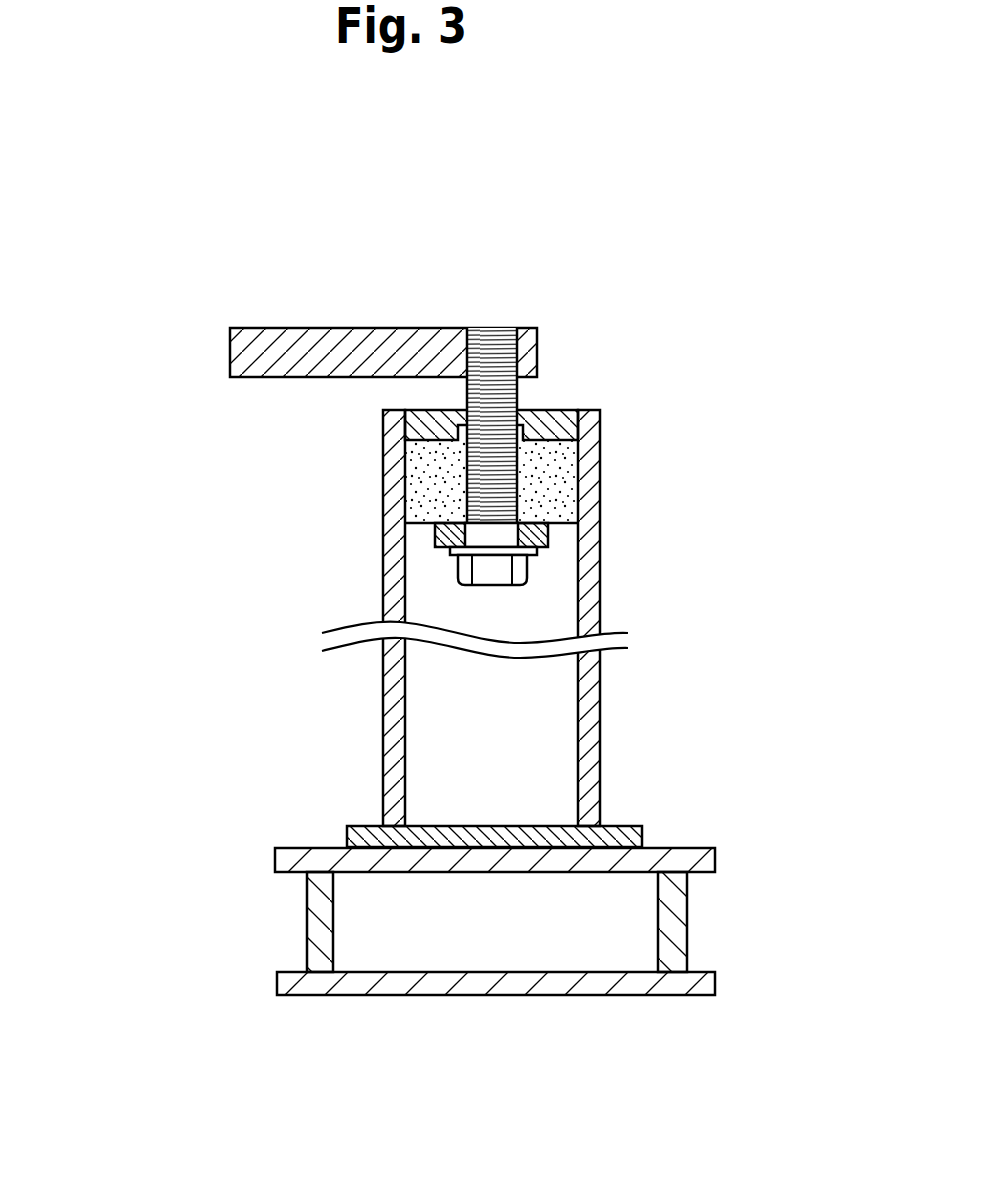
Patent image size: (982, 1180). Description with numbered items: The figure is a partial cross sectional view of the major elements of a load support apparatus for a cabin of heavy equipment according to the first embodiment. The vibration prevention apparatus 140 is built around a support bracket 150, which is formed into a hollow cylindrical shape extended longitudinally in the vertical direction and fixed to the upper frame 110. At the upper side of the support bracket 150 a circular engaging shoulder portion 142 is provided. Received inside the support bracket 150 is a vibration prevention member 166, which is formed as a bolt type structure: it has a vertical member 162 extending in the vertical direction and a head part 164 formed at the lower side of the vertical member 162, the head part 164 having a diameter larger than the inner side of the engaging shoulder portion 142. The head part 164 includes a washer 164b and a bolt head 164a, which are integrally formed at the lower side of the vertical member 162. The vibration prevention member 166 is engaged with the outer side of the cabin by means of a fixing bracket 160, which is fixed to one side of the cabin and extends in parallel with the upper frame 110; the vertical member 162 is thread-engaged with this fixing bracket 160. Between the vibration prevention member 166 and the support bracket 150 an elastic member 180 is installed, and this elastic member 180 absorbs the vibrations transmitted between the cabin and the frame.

The upper frame 110 is at (312, 848).
The vibration prevention apparatus 140 is at (240, 195).
The engaging shoulder portion 142 is at (553, 410).
The support bracket 150 is at (597, 556).
The fixing bracket 160 is at (230, 350).
The vertical member 162 is at (462, 458).
The head part 164 is at (248, 536).
The bolt head 164a is at (458, 577).
The washer 164b is at (436, 535).
The vibration prevention member 166 is at (112, 568).
The elastic member 180 is at (555, 475).